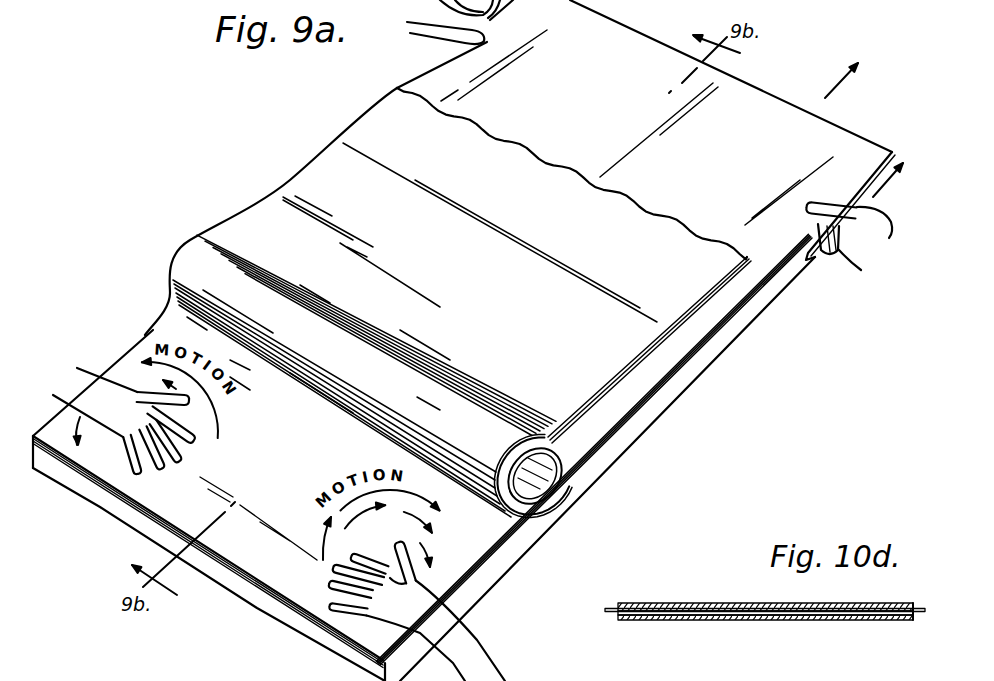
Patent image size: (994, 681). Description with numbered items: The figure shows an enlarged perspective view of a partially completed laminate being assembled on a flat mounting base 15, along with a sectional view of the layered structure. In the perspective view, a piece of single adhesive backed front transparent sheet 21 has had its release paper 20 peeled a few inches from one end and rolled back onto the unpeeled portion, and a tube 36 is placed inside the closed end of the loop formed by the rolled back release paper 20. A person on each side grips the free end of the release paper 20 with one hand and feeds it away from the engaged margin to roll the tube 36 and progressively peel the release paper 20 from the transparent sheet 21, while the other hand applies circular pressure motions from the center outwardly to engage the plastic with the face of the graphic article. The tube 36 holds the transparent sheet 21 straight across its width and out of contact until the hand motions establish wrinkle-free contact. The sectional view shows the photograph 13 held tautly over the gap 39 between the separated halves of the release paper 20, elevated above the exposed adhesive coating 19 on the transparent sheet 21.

In FIG. 9A, the flat mounting base 15 is at (617, 448).
In FIG. 9A, the release paper 20 is at (853, 148).
In FIG. 10D, the release paper 20 is at (918, 607).
In FIG. 9A, the front transparent sheet 21 is at (460, 567).
In FIG. 10D, the front transparent sheet 21 is at (862, 621).
In FIG. 9A, the tube 36 is at (570, 465).
In FIG. 10D, the photograph 13 is at (750, 603).
In FIG. 10D, the gap 39 is at (764, 621).
In FIG. 10D, the pressure sensitive adhesive coating 19 is at (916, 623).